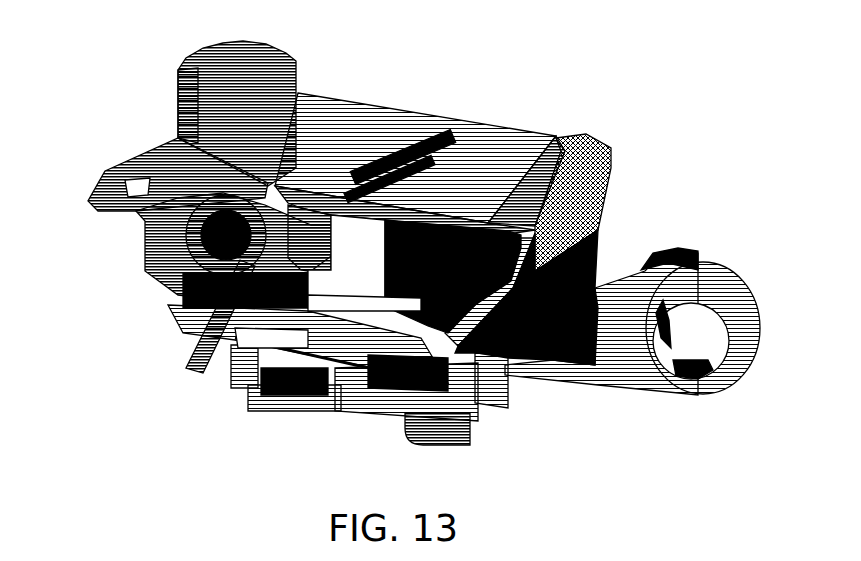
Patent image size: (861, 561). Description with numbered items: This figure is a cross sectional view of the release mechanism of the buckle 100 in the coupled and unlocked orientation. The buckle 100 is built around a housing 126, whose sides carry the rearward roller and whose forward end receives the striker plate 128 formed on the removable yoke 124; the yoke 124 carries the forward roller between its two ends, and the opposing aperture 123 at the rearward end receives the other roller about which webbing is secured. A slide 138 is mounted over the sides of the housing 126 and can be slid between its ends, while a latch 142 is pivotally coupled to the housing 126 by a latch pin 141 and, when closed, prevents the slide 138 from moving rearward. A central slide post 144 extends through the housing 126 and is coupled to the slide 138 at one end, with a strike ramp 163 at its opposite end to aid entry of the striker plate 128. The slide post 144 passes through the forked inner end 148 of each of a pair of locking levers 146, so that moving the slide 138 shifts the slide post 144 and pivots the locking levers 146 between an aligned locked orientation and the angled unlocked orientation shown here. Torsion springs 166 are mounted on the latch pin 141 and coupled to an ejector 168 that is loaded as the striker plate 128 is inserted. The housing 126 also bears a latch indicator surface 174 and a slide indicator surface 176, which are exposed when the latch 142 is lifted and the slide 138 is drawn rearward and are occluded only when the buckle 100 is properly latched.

The buckle 100 is at (650, 71).
The aperture 123 is at (683, 357).
The removable yoke 124 is at (600, 357).
The housing 126 is at (270, 393).
The striker plate 128 is at (470, 372).
The slide 138 is at (530, 128).
The latch pin 141 is at (203, 225).
The latch 142 is at (288, 63).
The slide post 144 is at (355, 233).
The locking levers 146 is at (473, 243).
The forked inner end 148 is at (327, 293).
The strike ramp 163 is at (290, 333).
The torsion springs 166 is at (185, 320).
The ejector 168 is at (212, 365).
The latch indicator surface 174 is at (138, 153).
The slide indicator surface 176 is at (523, 317).